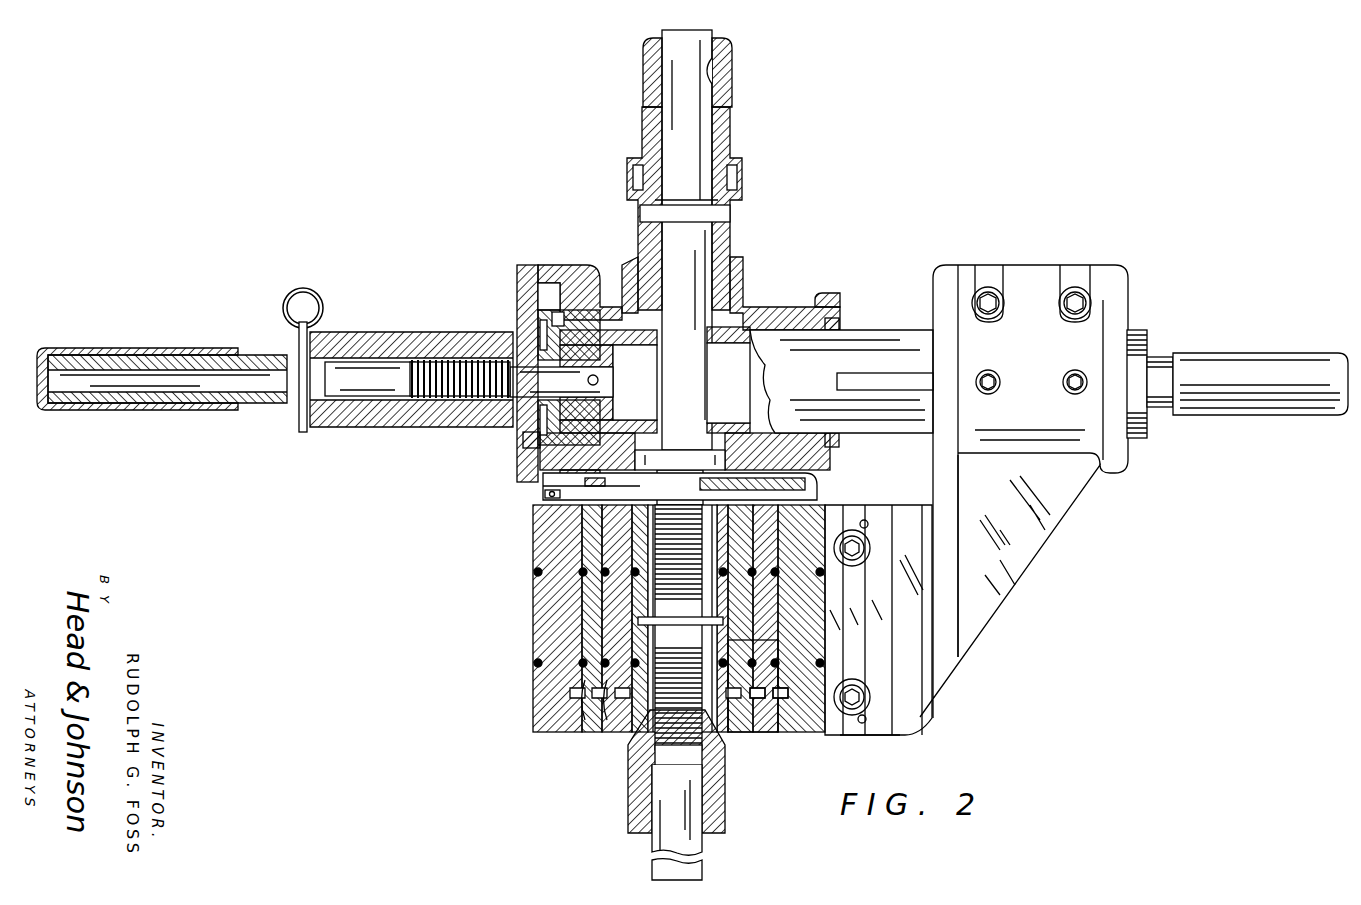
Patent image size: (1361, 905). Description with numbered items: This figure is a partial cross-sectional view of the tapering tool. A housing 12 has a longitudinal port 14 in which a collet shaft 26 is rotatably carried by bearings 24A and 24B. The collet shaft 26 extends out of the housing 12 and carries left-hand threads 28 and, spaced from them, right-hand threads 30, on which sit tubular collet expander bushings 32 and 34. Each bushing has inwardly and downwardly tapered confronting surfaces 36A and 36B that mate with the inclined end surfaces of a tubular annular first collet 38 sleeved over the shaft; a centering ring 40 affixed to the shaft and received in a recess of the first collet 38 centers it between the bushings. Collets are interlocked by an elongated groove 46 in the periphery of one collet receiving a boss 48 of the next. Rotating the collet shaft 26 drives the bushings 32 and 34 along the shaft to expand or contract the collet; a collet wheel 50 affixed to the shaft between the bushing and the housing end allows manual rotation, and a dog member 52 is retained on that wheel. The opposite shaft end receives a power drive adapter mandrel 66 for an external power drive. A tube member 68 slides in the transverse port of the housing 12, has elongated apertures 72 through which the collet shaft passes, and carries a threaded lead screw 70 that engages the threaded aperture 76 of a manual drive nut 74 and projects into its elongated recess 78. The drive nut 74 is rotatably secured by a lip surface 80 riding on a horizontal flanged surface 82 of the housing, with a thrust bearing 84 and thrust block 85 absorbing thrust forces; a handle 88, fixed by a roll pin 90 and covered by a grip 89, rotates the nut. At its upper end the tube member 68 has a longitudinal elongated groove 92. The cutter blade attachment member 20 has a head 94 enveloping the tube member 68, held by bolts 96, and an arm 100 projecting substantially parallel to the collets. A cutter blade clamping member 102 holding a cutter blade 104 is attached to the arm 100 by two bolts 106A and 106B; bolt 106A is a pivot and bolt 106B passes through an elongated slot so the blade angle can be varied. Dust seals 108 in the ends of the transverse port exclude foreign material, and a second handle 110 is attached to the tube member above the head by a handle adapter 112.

The housing 12 is at (620, 285).
The longitudinal port 14 is at (632, 200).
The cutter blade attachment member 20 is at (1053, 602).
The bearing 24A is at (740, 215).
The bearing 24B is at (705, 455).
The collet shaft 26 is at (705, 290).
The left-hand threads 28 is at (690, 590).
The right-hand threads 30 is at (630, 760).
The collet expander bushing 32 is at (660, 535).
The collet expander bushing 34 is at (625, 830).
The tapered confronting surface 36A is at (730, 540).
The tapered confronting surface 36B is at (730, 740).
The first collet 38 is at (610, 735).
The centering ring 40 is at (640, 620).
The elongated groove 46 is at (770, 740).
The boss 48 is at (782, 700).
The collet wheel 50 is at (820, 490).
The dog member 52 is at (545, 495).
The power drive adapter mandrel 66 is at (722, 95).
The tube member 68 is at (905, 330).
The lead screw 70 is at (427, 397).
The elongated apertures 72 is at (561, 382).
The manual drive nut 74 is at (370, 340).
The threaded aperture 76 is at (458, 362).
The elongated recess 78 is at (370, 397).
The lip surface 80 is at (520, 280).
The horizontal flanged surface 82 is at (520, 290).
The thrust bearing 84 is at (530, 345).
The thrust block 85 is at (558, 320).
The handle 88 is at (250, 408).
The grip 89 is at (145, 408).
The roll pin 90 is at (303, 430).
The longitudinal elongated groove 92 is at (870, 378).
The head 94 is at (1118, 280).
The bolts 96 is at (1075, 287).
The arm 100 is at (1015, 552).
The cutter blade clamping member 102 is at (862, 735).
The cutter blade 104 is at (855, 735).
The bolt 106A is at (860, 548).
The bolt 106B is at (860, 698).
The dust seals 108 is at (530, 440).
The second handle 110 is at (1185, 410).
The handle adapter 112 is at (1140, 440).